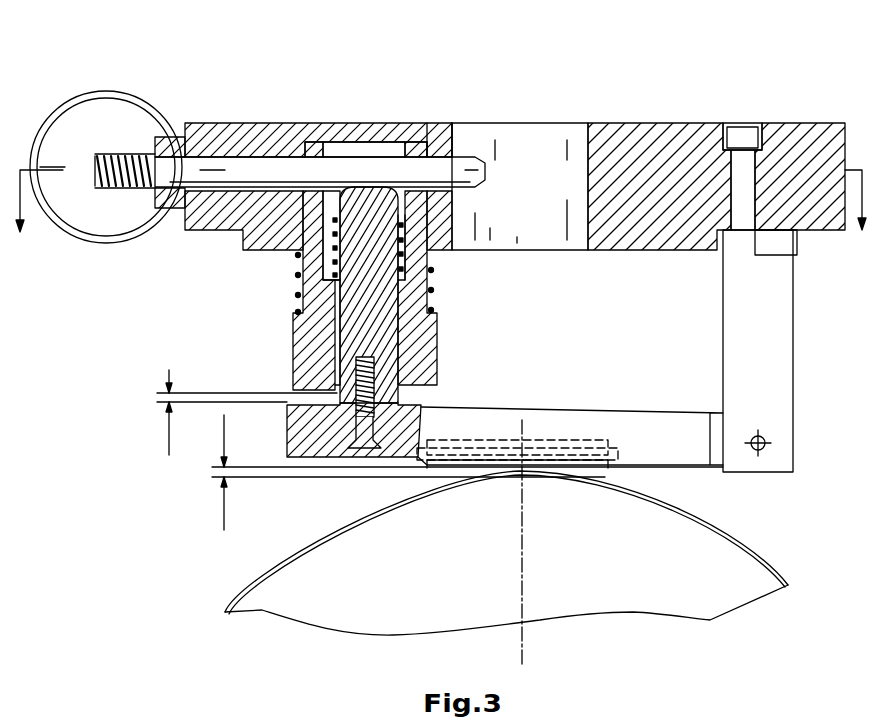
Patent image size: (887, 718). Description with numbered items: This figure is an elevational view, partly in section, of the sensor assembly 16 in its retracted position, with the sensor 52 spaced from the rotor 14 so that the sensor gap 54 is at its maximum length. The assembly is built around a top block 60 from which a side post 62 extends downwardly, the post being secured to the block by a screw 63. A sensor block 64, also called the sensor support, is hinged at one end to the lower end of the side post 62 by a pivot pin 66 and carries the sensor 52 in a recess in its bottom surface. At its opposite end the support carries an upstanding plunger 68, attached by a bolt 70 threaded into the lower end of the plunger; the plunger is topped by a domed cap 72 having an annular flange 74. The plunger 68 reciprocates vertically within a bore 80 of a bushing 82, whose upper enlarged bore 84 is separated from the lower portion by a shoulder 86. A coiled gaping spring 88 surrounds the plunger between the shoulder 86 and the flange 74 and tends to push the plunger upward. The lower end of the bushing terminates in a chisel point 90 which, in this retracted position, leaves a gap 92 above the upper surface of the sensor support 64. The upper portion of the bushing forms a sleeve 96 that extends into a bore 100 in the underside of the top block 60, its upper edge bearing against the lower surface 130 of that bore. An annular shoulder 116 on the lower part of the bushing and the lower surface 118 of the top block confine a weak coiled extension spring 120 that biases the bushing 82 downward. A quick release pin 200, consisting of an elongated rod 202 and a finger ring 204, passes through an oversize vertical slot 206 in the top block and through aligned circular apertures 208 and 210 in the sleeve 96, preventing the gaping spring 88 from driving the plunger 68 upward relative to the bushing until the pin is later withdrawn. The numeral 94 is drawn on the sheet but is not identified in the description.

The rotor 14 is at (733, 580).
The sensor assembly 16 is at (853, 124).
The sensor 52 is at (603, 470).
The sensor gap 54 is at (212, 475).
The top block 60 is at (672, 124).
The side post 62 is at (755, 323).
The screw 63 is at (743, 133).
The sensor block 64 is at (493, 427).
The pivot pin 66 is at (765, 438).
The plunger 68 is at (390, 300).
The bolt 70 is at (362, 431).
The domed cap 72 is at (440, 186).
The annular flange 74 is at (378, 192).
The bore 80 is at (415, 345).
The bushing 82 is at (427, 373).
The enlarged bore 84 is at (383, 146).
The shoulder 86 is at (295, 294).
The gaping spring 88 is at (337, 217).
The chisel point 90 is at (382, 402).
The gap 92 is at (157, 400).
The inner spring 94 is at (327, 238).
The sleeve 96 is at (423, 146).
The bore 100 is at (350, 147).
The annular shoulder 116 is at (295, 313).
The lower surface 118 is at (267, 252).
The extension spring 120 is at (433, 272).
The lower surface 130 is at (362, 142).
The quick release pin 200 is at (58, 97).
The rod 202 is at (462, 160).
The ring 204 is at (103, 243).
The vertical slot 206 is at (182, 210).
The circular aperture 208 is at (300, 157).
The circular aperture 210 is at (405, 148).